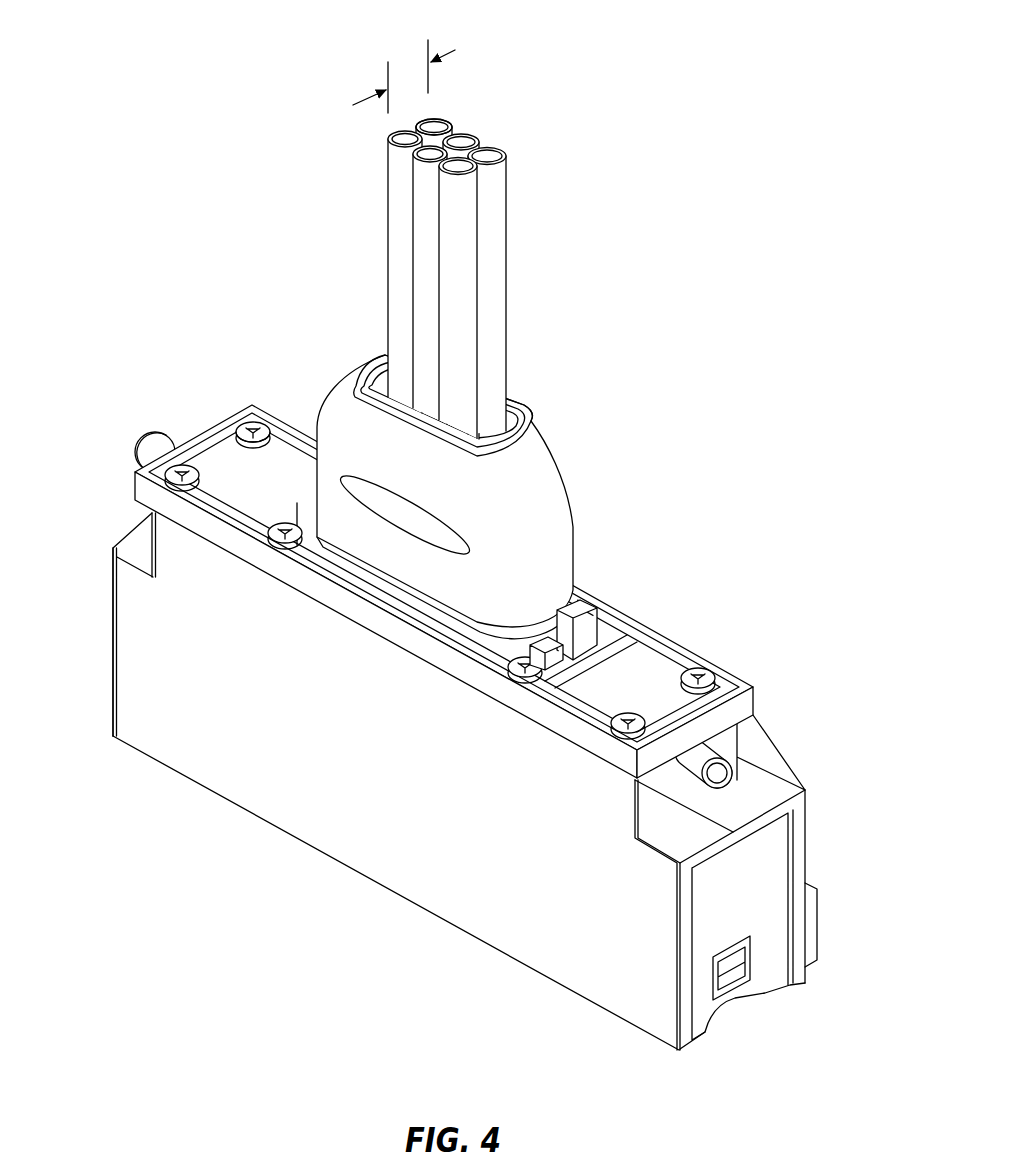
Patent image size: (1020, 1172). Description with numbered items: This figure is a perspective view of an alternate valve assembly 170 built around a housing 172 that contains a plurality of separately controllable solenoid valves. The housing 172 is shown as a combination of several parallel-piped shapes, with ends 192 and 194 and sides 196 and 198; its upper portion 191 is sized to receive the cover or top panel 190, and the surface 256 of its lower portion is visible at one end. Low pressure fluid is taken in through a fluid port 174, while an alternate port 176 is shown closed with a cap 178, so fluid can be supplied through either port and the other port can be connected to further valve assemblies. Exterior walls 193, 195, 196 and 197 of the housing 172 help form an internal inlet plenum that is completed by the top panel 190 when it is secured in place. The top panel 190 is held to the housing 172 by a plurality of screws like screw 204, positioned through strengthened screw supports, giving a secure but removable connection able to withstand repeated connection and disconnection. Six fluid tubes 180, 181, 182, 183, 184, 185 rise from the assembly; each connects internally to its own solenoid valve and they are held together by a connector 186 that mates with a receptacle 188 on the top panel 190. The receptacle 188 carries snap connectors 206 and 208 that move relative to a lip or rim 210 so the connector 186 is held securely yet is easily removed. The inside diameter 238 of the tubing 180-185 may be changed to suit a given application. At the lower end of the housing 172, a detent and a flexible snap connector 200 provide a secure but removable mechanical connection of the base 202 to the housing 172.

The valve assembly 170 is at (712, 283).
The housing 172 is at (360, 781).
The fluid port 174 is at (740, 777).
The alternate port 176 is at (173, 443).
The cap 178 is at (137, 447).
The fluid tube 180 is at (493, 374).
The fluid tube 181 is at (450, 254).
The fluid tube 182 is at (445, 120).
The fluid tube 183 is at (400, 355).
The fluid tube 184 is at (425, 333).
The fluid tube 185 is at (467, 352).
The connector 186 is at (484, 495).
The receptacle 188 is at (478, 577).
The top panel 190 is at (642, 682).
The upper portion 191 is at (425, 722).
The end 192 is at (738, 892).
The exterior wall 193 is at (657, 800).
The end 194 is at (113, 622).
The exterior wall 195 is at (143, 551).
The side 196 is at (357, 853).
The exterior wall 197 is at (743, 727).
The side 198 is at (724, 889).
The flexible snap connector 200 is at (732, 958).
The base 202 is at (777, 993).
The screw 204 is at (715, 672).
The snap connector 206 is at (590, 600).
The snap connector 208 is at (293, 500).
The rim 210 is at (525, 658).
The inside diameter 238 is at (455, 50).
The surface 256 is at (793, 792).